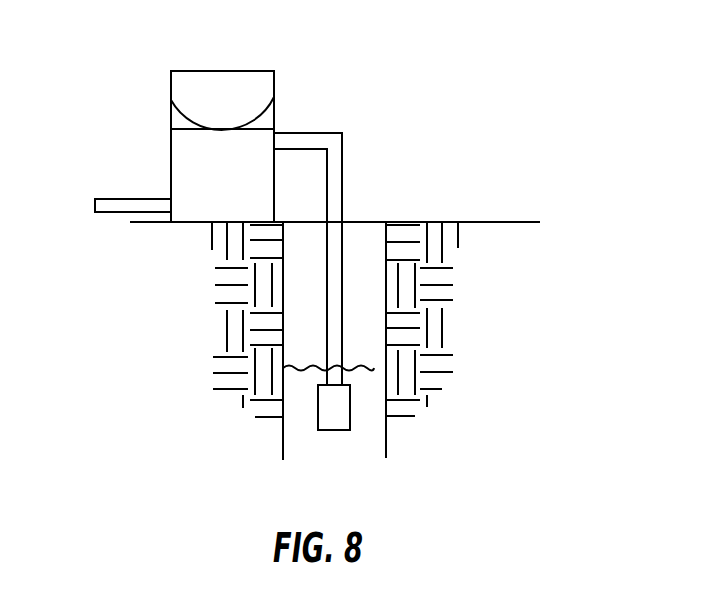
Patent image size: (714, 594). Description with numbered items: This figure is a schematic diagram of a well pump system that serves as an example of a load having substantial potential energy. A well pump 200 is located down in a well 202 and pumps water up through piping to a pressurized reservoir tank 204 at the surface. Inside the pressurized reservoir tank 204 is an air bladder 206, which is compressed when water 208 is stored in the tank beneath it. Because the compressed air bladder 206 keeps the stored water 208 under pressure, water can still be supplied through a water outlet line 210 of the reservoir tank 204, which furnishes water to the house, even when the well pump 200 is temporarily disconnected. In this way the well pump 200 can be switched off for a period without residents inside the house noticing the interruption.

The well pump 200 is at (370, 442).
The well 202 is at (341, 294).
The pressurized reservoir tank 204 is at (289, 137).
The air bladder 206 is at (234, 83).
The water 208 is at (240, 188).
The water outlet line 210 is at (108, 184).